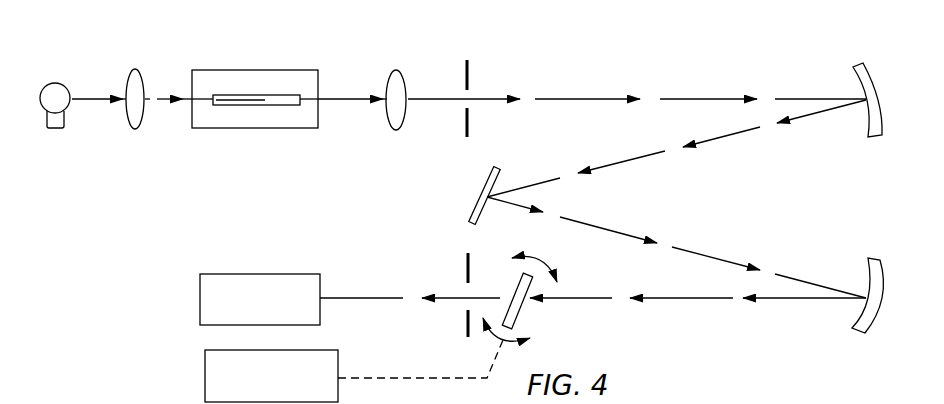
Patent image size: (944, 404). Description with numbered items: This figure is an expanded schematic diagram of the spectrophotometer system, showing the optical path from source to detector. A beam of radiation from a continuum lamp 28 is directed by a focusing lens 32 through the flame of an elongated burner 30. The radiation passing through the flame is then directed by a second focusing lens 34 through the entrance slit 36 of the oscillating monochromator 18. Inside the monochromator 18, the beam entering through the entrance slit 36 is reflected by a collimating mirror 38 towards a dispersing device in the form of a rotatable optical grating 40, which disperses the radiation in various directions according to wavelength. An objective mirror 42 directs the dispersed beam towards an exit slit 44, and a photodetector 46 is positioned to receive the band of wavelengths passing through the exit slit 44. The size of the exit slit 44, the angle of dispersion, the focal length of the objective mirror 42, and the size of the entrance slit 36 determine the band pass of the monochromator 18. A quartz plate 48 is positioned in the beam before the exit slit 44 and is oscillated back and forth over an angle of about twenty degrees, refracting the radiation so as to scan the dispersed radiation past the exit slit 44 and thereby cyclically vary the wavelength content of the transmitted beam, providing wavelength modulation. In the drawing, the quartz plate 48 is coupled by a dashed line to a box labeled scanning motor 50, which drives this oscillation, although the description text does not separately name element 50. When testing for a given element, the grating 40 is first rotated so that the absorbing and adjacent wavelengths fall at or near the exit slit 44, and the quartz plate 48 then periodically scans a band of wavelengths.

The oscillating monochromator 18 is at (661, 200).
The continuum lamp 28 is at (57, 82).
The elongated burner 30 is at (215, 70).
The focusing lens 32 is at (136, 70).
The second focusing lens 34 is at (401, 75).
The entrance slit 36 is at (470, 72).
The collimating mirror 38 is at (857, 64).
The rotatable optical grating 40 is at (498, 168).
The objective mirror 42 is at (872, 257).
The exit slit 44 is at (466, 265).
The photodetector 46 is at (248, 274).
The quartz plate 48 is at (519, 313).
The scanning motor 50 is at (205, 373).